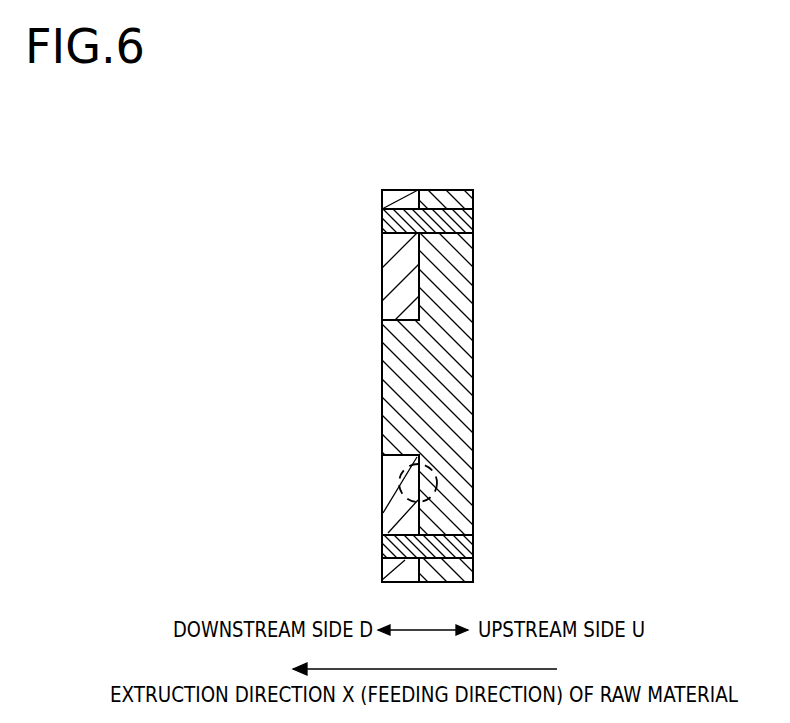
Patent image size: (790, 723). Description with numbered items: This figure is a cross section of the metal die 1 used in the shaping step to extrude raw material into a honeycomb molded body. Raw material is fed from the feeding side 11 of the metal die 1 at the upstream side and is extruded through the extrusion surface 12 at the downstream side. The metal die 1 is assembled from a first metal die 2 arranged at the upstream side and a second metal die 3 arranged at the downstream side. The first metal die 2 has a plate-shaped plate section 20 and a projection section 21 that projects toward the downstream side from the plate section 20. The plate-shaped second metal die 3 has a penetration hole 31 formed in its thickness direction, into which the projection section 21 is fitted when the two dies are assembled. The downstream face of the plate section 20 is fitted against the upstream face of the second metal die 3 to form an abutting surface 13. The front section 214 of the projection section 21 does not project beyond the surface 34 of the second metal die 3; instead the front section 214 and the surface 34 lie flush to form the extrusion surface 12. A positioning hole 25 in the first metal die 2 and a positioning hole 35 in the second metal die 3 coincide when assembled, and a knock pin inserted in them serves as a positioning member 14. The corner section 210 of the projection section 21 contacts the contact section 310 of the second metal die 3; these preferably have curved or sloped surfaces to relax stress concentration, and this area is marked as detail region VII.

The metal die 1 is at (488, 162).
The first metal die 2 is at (437, 383).
The second metal die 3 is at (395, 512).
The feeding side 11 is at (473, 335).
The extrusion surface 12 is at (395, 478).
The abutting surface 13 is at (405, 273).
The positioning member 14 is at (452, 207).
The plate section 20 is at (447, 286).
The projection section 21 is at (400, 407).
The positioning hole 25 is at (448, 233).
The penetration hole 31 is at (392, 335).
The surface 34 is at (400, 513).
The positioning hole 35 is at (397, 207).
The corner section 210 is at (405, 302).
The front section 214 is at (382, 365).
The contact section 310 is at (420, 454).
The detail region VII is at (437, 484).